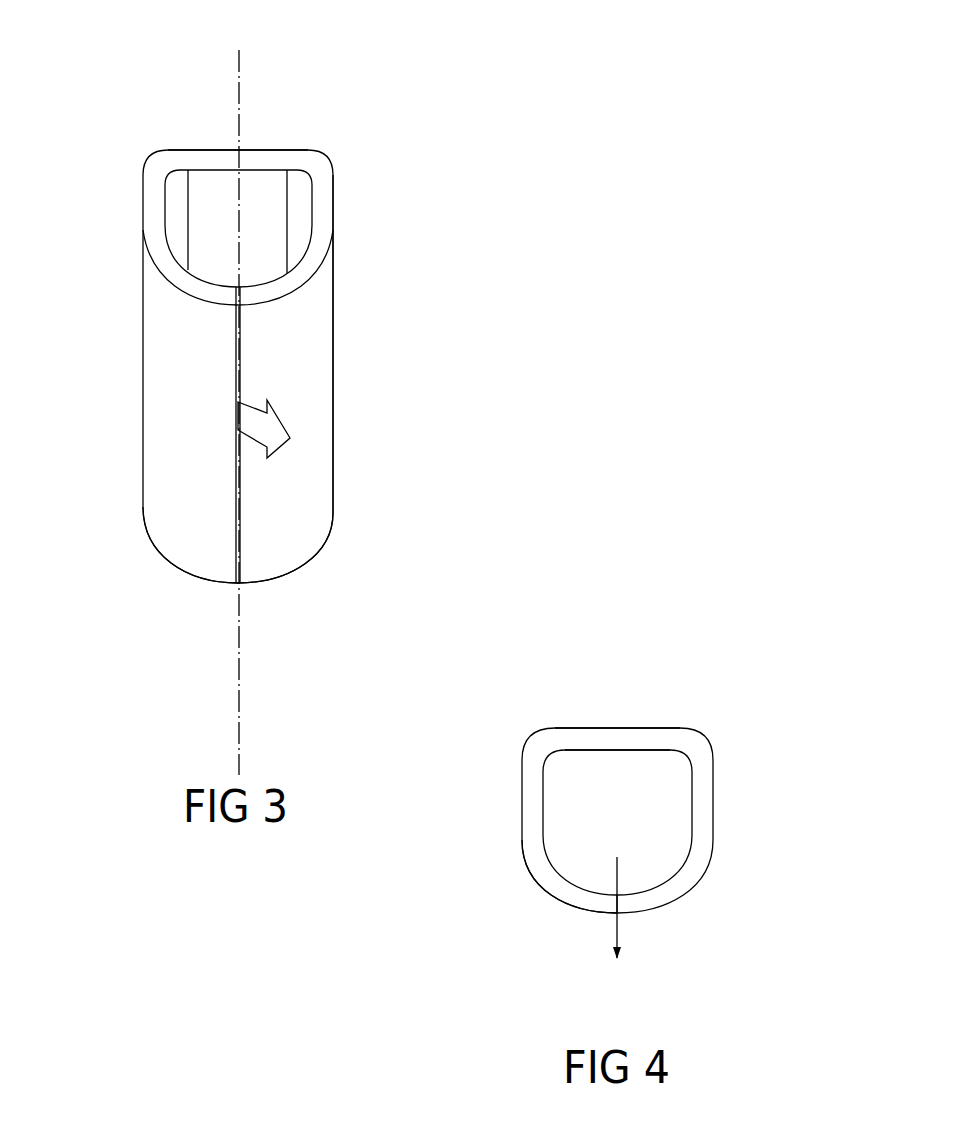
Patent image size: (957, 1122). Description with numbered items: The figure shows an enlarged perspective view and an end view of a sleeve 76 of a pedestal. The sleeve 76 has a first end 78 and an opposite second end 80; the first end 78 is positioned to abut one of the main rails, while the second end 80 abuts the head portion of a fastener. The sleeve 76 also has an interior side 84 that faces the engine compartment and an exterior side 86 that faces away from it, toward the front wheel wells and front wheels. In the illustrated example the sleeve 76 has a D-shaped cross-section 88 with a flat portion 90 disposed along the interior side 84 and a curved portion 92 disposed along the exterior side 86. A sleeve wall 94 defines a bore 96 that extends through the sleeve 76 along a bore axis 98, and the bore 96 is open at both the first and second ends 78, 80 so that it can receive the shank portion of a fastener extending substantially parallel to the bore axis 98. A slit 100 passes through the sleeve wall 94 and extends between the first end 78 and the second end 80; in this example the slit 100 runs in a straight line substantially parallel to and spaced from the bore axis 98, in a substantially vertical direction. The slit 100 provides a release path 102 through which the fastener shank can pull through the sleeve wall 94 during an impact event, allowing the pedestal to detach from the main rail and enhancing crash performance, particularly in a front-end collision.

In FIG. 3, the sleeve 76 is at (103, 153).
In FIG. 4, the sleeve 76 is at (501, 728).
In FIG. 3, the first end 78 is at (339, 151).
In FIG. 3, the second end 80 is at (358, 555).
In FIG. 3, the interior side 84 is at (160, 535).
In FIG. 4, the interior side 84 is at (590, 913).
In FIG. 3, the exterior side 86 is at (250, 148).
In FIG. 4, the exterior side 86 is at (626, 725).
In FIG. 3, the D-shaped cross-section 88 is at (365, 342).
In FIG. 4, the D-shaped cross-section 88 is at (746, 832).
In FIG. 3, the flat portion 90 is at (233, 200).
In FIG. 4, the flat portion 90 is at (620, 750).
In FIG. 3, the curved portion 92 is at (333, 602).
In FIG. 4, the curved portion 92 is at (711, 987).
In FIG. 3, the sleeve wall 94 is at (317, 250).
In FIG. 4, the sleeve wall 94 is at (702, 815).
In FIG. 3, the bore 96 is at (214, 255).
In FIG. 3, the bore axis 98 is at (241, 77).
In FIG. 3, the slit 100 is at (241, 518).
In FIG. 4, the slit 100 is at (620, 904).
In FIG. 3, the release path 102 is at (280, 415).
In FIG. 4, the release path 102 is at (616, 880).